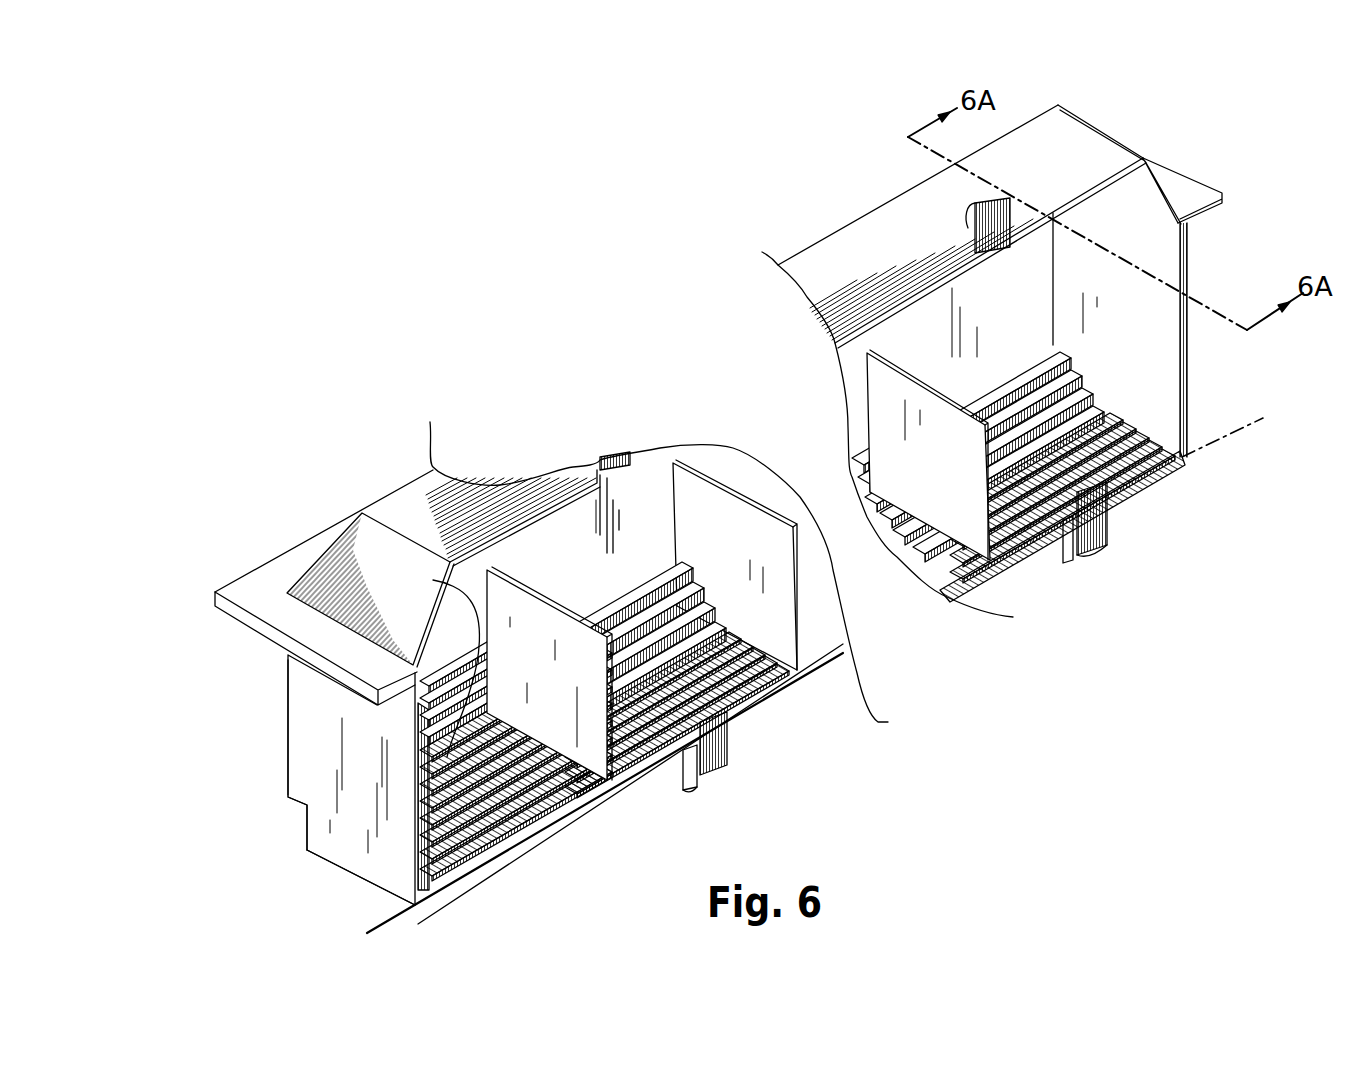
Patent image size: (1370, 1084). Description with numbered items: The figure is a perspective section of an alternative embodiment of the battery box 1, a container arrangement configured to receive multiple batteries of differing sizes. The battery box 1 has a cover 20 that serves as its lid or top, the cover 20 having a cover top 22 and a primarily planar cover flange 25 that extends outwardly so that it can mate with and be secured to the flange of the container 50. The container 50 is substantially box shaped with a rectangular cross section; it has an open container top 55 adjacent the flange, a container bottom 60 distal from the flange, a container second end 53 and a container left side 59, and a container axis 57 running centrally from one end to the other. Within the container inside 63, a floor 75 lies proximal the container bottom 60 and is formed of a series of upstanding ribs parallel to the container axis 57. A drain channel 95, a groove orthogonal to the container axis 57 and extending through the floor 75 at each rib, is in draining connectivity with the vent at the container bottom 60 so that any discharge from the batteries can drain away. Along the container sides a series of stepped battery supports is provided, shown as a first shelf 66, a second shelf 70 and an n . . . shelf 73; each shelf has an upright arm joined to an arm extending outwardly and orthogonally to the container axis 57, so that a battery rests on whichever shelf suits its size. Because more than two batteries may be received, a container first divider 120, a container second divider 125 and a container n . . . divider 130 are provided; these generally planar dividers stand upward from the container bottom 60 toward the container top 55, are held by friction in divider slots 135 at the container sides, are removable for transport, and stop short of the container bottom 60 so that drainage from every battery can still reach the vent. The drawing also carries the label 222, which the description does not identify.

The battery box 1 is at (1285, 146).
The cover 20 is at (375, 535).
The cover top 22 is at (937, 188).
The cover flange 25 is at (248, 593).
The container 50 is at (300, 763).
The container second end 53 is at (300, 713).
The container top 55 is at (445, 565).
The container axis 57 is at (397, 913).
The container left side 59 is at (288, 680).
The container bottom 60 is at (430, 893).
The container inside 63 is at (433, 580).
The first shelf 66 is at (1000, 353).
The second shelf 70 is at (470, 670).
The n . . . shelf 73 is at (533, 727).
The floor 75 is at (523, 730).
The drain channel 95 is at (1093, 488).
The container first divider 120 is at (502, 583).
The container second divider 125 is at (693, 487).
The container n . . . divider 130 is at (875, 385).
The divider slots 135 is at (693, 547).
The top cover 222 is at (387, 507).